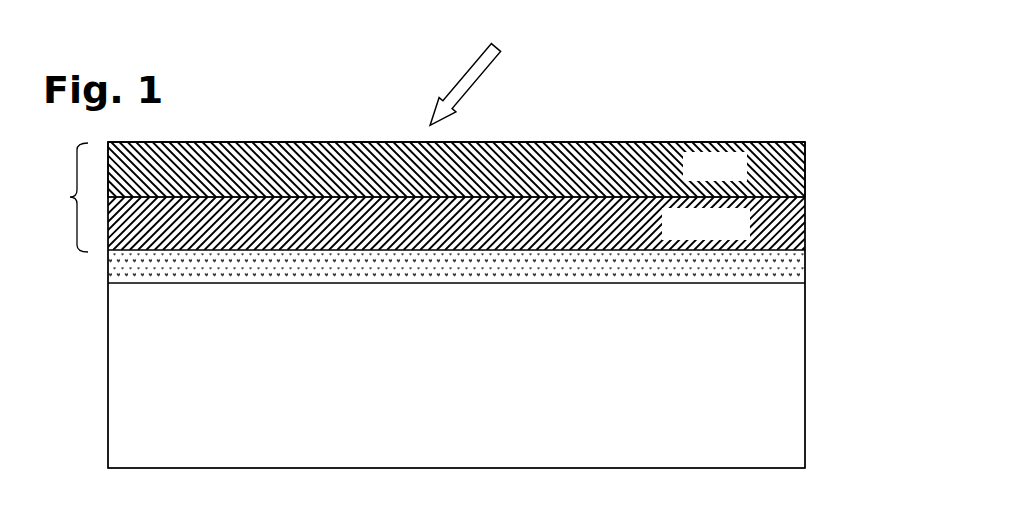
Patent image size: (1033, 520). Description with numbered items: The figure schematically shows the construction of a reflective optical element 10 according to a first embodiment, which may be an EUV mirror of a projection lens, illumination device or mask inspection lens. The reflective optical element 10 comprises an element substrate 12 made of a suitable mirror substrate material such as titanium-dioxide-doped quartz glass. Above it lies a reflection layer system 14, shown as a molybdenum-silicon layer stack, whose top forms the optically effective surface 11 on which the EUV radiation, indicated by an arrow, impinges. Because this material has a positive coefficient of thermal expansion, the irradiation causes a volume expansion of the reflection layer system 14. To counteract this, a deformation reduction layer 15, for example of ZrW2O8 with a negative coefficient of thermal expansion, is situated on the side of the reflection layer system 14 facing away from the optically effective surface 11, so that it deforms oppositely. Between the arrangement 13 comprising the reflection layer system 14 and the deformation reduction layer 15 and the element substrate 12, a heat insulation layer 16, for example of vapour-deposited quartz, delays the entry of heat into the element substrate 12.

The reflective optical element 10 is at (588, 86).
The optically effective surface 11 is at (627, 142).
The element substrate 12 is at (178, 424).
The arrangement 13 is at (62, 197).
The reflection layer system 14 is at (176, 177).
The deformation reduction layer 15 is at (176, 234).
The heat insulation layer 16 is at (806, 260).